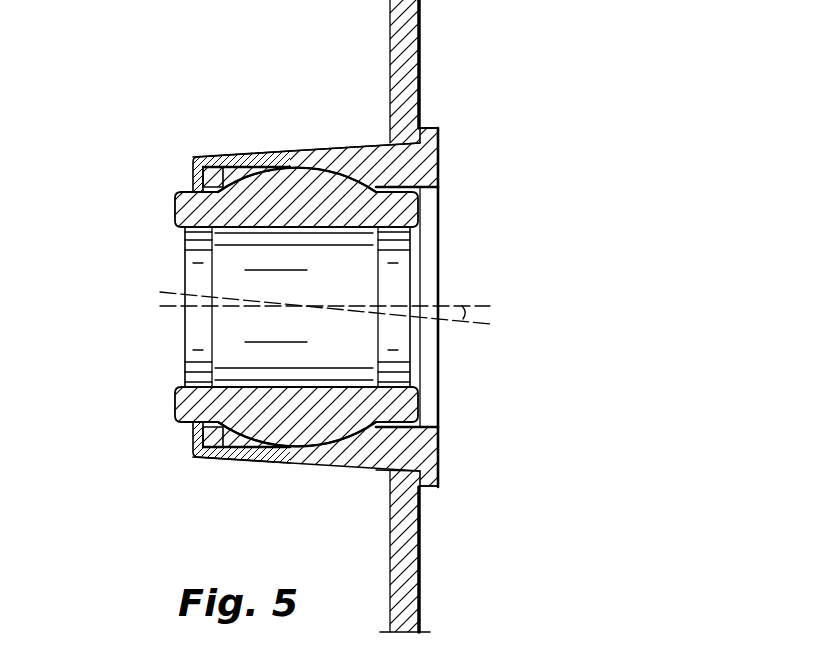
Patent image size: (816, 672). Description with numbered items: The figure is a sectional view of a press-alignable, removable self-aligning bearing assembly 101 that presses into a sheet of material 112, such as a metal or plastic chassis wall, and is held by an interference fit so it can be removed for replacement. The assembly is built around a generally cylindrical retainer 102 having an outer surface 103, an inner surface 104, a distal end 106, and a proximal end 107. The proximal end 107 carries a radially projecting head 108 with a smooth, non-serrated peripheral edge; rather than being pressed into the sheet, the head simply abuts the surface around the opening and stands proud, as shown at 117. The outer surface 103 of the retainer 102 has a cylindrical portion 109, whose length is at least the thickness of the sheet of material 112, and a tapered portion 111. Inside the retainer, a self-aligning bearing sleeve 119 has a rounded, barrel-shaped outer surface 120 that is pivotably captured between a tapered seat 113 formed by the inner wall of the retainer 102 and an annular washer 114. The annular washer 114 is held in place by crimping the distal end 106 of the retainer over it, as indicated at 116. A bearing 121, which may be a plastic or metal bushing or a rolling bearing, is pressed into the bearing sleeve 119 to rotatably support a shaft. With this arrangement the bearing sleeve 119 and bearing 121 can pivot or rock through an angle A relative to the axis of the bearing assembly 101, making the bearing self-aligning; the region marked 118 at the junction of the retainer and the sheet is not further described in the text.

The bearing assembly 101 is at (149, 111).
The retainer 102 is at (327, 160).
The outer surface 103 is at (288, 151).
The inner surface 104 is at (250, 168).
The distal end 106 is at (182, 166).
The proximal end 107 is at (442, 168).
The head 108 is at (437, 128).
The cylindrical portion 109 is at (404, 140).
The tapered portion 111 is at (362, 143).
The sheet of material 112 is at (423, 575).
The tapered seat 113 is at (434, 417).
The annular washer 114 is at (229, 455).
The crimp 116 is at (195, 436).
The proud-standing head 117 is at (432, 489).
The mounting surface 118 is at (383, 473).
The bearing sleeve 119 is at (178, 407).
The outer surface 120 is at (257, 455).
The bearing 121 is at (228, 333).
The angle A is at (454, 306).